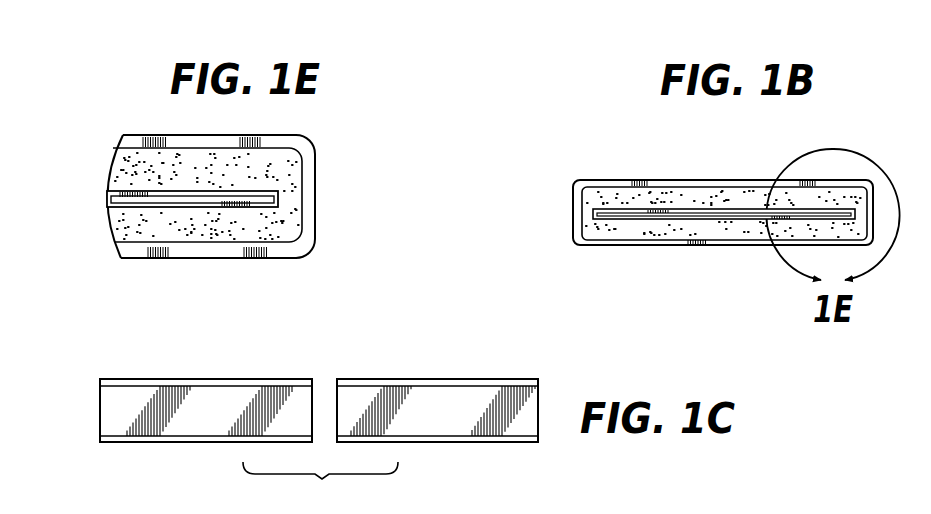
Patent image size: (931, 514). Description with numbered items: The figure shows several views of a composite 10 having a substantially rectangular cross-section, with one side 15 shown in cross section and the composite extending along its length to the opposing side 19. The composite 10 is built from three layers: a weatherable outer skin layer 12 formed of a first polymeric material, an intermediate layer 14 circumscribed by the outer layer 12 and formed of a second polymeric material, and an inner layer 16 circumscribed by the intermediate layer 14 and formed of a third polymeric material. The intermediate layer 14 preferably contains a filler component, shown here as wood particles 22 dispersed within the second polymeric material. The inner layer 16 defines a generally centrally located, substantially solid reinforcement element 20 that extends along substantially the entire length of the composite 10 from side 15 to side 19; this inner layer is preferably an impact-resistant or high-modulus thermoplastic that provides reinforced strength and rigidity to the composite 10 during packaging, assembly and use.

In FIG. 1E, the composite 10 is at (210, 161).
In FIG. 1B, the composite 10 is at (668, 183).
In FIG. 1C, the composite 10 is at (304, 390).
In FIG. 1E, the outer skin layer 12 is at (314, 201).
In FIG. 1B, the outer skin layer 12 is at (636, 179).
In FIG. 1C, the outer skin layer 12 is at (443, 426).
In FIG. 1E, the intermediate layer 14 is at (296, 225).
In FIG. 1B, the intermediate layer 14 is at (606, 231).
In FIG. 1E, the side 15 is at (99, 164).
In FIG. 1B, the side 15 is at (559, 217).
In FIG. 1C, the side 15 is at (100, 432).
In FIG. 1E, the inner layer 16 is at (202, 190).
In FIG. 1B, the inner layer 16 is at (724, 200).
In FIG. 1C, the opposing side 19 is at (538, 428).
In FIG. 1E, the reinforcement element 20 is at (118, 200).
In FIG. 1B, the reinforcement element 20 is at (723, 220).
In FIG. 1E, the wood particles 22 is at (219, 238).